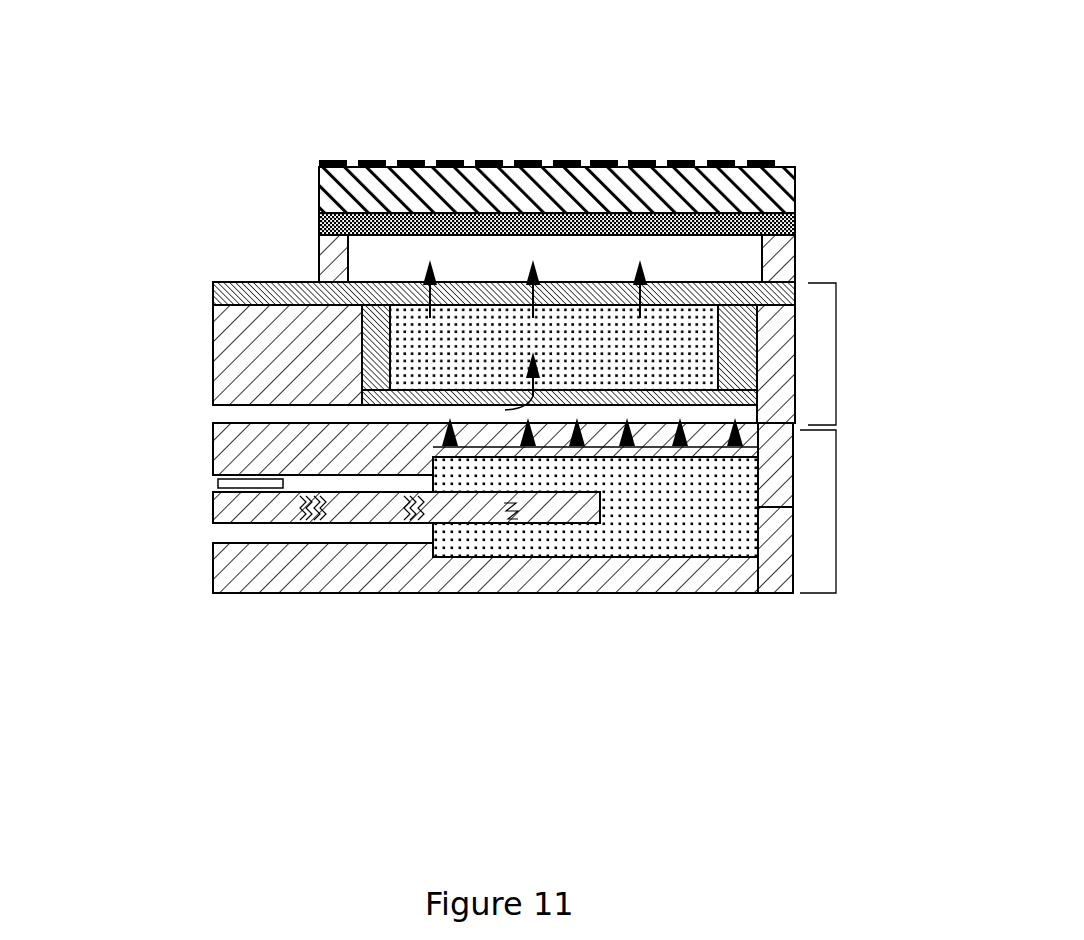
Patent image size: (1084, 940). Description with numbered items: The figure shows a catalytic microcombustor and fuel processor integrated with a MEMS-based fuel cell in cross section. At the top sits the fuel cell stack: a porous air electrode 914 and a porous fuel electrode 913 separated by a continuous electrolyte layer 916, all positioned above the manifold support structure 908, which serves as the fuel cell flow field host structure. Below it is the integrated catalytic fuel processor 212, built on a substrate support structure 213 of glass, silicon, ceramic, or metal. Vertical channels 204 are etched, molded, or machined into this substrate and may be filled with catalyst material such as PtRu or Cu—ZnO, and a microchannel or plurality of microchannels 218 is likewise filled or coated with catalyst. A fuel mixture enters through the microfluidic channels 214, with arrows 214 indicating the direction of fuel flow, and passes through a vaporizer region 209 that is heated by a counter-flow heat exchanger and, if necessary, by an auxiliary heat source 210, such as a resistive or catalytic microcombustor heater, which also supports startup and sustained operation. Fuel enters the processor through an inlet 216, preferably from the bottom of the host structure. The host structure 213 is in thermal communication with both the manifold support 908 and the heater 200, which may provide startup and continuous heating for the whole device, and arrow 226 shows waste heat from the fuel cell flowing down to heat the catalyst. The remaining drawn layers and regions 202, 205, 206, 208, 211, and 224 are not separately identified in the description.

The heater 200 is at (856, 527).
The lower substrate plate 202 is at (300, 464).
The vertical channels 204 is at (372, 498).
The lower fill region 205 is at (608, 543).
The lower channel 206 is at (233, 535).
The upper channel 208 is at (210, 485).
The vaporizer region 209 is at (339, 495).
The auxiliary heat source 210 is at (383, 532).
The side wall 211 is at (296, 404).
The catalytic fuel processor 212 is at (856, 355).
The substrate support structure 213 is at (237, 311).
The microfluidic channels 214 is at (228, 413).
The inlet 216 is at (660, 402).
The microchannels 218 is at (626, 392).
The upper plate of lower assembly 224 is at (602, 462).
The waste heat flow arrow 226 is at (375, 152).
The manifold support structure 908 is at (812, 263).
The fuel electrode 913 is at (812, 223).
The air electrode 914 is at (630, 140).
The electrolyte layer 916 is at (806, 175).